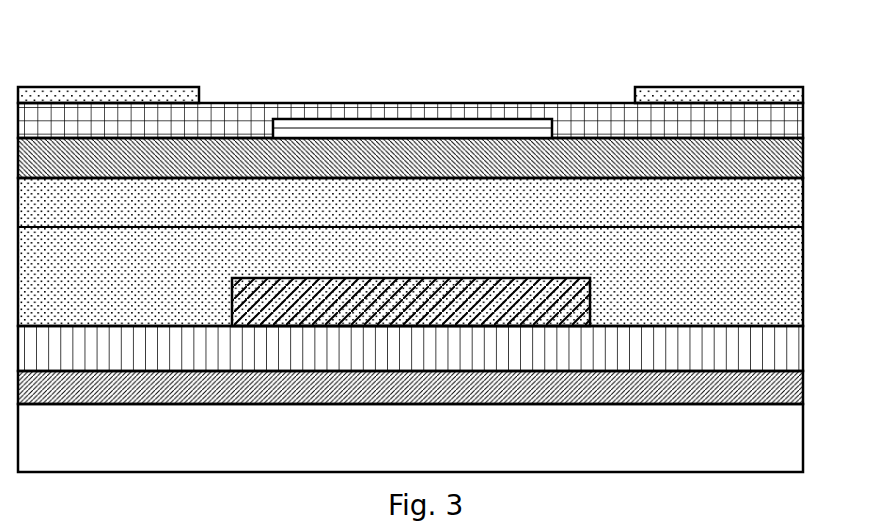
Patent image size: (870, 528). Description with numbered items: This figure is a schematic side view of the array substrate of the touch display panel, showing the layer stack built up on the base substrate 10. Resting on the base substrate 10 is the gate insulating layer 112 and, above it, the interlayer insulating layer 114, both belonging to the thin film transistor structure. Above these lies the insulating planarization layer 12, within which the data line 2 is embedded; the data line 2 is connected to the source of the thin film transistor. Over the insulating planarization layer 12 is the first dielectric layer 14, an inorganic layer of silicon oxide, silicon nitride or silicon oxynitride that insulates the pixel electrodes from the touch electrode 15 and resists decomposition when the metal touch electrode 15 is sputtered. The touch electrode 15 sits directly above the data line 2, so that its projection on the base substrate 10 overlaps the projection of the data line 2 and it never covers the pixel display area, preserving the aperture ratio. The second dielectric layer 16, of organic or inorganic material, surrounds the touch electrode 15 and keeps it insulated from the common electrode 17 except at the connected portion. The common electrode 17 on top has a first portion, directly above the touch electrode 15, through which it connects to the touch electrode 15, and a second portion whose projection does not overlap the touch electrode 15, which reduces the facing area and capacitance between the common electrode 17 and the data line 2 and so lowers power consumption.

The base substrate 10 is at (783, 435).
The gate insulating layer 112 is at (783, 392).
The interlayer insulating layer 114 is at (783, 355).
The insulating planarization layer 12 is at (783, 205).
The data line 2 is at (568, 312).
The first dielectric layer 14 is at (783, 162).
The second dielectric layer 16 is at (783, 121).
The touch electrode 15 is at (477, 129).
The common electrode 17 is at (690, 97).